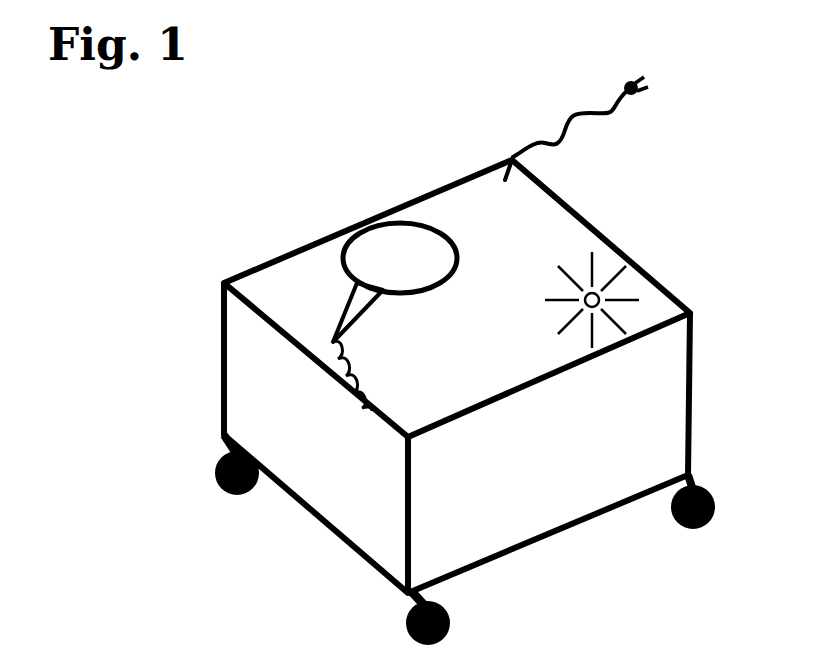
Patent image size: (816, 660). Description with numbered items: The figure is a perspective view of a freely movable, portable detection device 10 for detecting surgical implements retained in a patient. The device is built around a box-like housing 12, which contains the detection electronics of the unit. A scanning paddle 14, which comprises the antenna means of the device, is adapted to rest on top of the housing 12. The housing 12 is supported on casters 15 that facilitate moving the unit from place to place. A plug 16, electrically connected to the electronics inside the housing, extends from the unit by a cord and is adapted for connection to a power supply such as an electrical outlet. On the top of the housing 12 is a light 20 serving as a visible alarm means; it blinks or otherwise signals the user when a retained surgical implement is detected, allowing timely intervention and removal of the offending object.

The portable detection device 10 is at (326, 150).
The housing 12 is at (543, 540).
The scanning paddle 14 is at (392, 262).
The casters 15 is at (407, 620).
The plug 16 is at (613, 112).
The light 20 is at (594, 291).